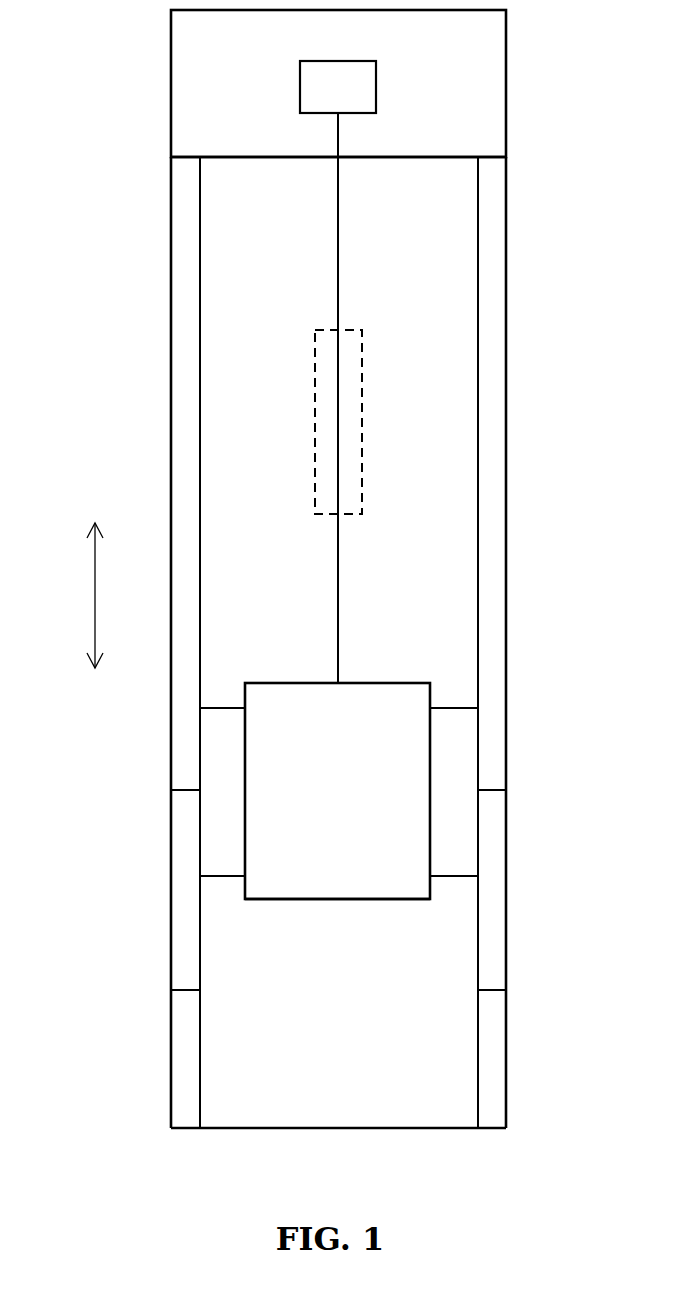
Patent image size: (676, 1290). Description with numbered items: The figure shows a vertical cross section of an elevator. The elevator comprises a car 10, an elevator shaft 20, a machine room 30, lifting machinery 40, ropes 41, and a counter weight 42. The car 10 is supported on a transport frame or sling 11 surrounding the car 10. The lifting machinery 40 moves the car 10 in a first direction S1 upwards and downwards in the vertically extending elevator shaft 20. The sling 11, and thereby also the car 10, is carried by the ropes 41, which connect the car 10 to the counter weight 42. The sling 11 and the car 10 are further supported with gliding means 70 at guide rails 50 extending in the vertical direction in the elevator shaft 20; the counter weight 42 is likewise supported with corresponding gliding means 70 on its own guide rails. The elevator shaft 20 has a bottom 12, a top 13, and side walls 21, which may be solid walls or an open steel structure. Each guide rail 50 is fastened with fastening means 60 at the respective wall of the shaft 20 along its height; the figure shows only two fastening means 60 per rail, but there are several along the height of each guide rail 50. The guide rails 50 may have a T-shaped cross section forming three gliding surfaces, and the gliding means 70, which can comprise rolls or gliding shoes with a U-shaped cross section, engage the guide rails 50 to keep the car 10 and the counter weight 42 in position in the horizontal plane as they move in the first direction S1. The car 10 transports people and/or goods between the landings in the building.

The car 10 is at (322, 787).
The transport frame 11 is at (346, 900).
The bottom 12 is at (336, 1126).
The top 13 is at (258, 160).
The elevator shaft 20 is at (409, 442).
The side walls 21 is at (171, 370).
The machine room 30 is at (436, 59).
The lifting machinery 40 is at (323, 100).
The ropes 41 is at (340, 238).
The counter weight 42 is at (324, 423).
The guide rails 50 is at (200, 559).
The fastening means 60 is at (190, 791).
The gliding means 70 is at (220, 706).
The first direction S1 is at (95, 604).